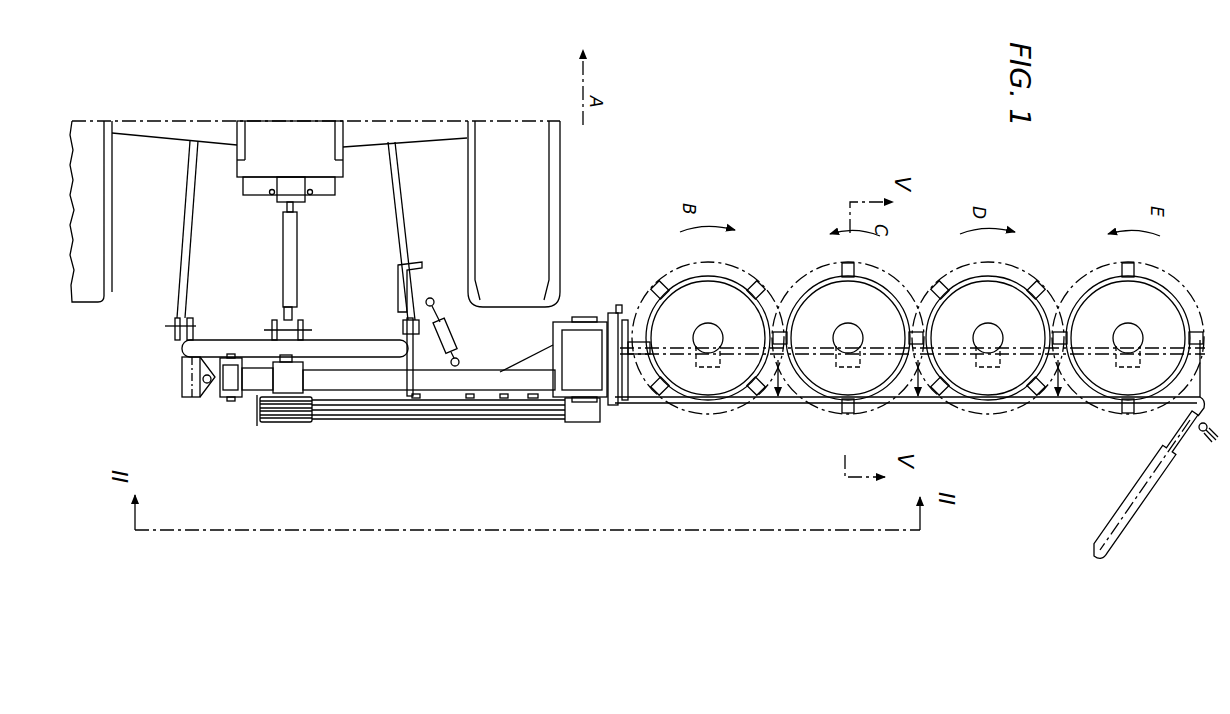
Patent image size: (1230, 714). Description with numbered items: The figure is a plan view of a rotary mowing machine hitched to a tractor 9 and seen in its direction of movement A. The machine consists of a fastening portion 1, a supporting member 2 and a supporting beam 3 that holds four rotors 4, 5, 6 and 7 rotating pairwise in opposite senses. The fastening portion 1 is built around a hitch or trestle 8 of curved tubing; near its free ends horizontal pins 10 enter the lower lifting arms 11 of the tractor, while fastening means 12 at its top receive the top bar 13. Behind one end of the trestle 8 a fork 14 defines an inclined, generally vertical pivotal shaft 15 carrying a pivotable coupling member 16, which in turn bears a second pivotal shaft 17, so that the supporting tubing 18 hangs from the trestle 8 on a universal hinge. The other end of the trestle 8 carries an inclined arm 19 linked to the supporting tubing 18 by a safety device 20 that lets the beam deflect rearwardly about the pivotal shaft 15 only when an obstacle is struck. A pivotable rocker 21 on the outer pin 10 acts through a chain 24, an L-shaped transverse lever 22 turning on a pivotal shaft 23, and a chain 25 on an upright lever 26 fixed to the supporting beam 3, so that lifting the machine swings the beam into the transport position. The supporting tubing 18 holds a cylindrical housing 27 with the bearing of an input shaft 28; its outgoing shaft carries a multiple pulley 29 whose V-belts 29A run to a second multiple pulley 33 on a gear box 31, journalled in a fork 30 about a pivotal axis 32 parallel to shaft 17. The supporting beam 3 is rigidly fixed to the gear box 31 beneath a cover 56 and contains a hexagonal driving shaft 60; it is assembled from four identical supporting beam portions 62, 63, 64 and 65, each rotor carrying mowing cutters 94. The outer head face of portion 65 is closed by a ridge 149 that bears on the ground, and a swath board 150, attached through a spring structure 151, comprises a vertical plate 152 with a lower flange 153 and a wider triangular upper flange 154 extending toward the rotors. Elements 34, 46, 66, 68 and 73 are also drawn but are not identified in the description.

The fastening portion 1 is at (343, 338).
The supporting member 2 is at (491, 369).
The supporting beam 3 is at (1080, 405).
The rotor 4 is at (741, 276).
The rotor 5 is at (823, 276).
The rotor 6 is at (1031, 274).
The rotor 7 is at (1177, 270).
The hitch or trestle 8 is at (242, 338).
The tractor 9 is at (438, 139).
The horizontal pins 10 is at (174, 326).
The lower lifting arms 11 is at (186, 200).
The fastening means 12 is at (284, 300).
The top bar 13 is at (297, 255).
The fork 14 is at (182, 372).
The pivotal shaft 15 is at (190, 390).
The pivotable coupling member 16 is at (208, 398).
The pivotal shaft 17 is at (230, 402).
The supporting tubing 18 is at (252, 398).
The arm 19 is at (434, 296).
The safety device 20 is at (457, 348).
The pivotable rocker 21 is at (404, 292).
The transverse lever 22 is at (470, 401).
The pivotal shaft 23 is at (504, 401).
The chain 24 is at (417, 401).
The chain 25 is at (533, 401).
The upright lever 26 is at (627, 402).
The cylindrical housing 27 is at (260, 404).
The input shaft 28 is at (292, 355).
The multiple pulley 29 is at (300, 423).
The V-belts 29A is at (340, 422).
The fork 30 is at (556, 322).
The gear box 31 is at (562, 350).
The pivotal axis 32 is at (618, 305).
The multiple pulley 33 is at (592, 424).
The plate 34 is at (613, 313).
The tine 46 is at (663, 286).
The cover 56 is at (646, 320).
The hexagonal driving shaft 60 is at (724, 345).
The supporting beam portion 62 is at (772, 404).
The supporting beam portion 63 is at (786, 404).
The supporting beam portion 64 is at (923, 404).
The supporting beam portion 65 is at (1063, 404).
The tine 66 is at (945, 285).
The tine 68 is at (894, 268).
The hub bracket 73 is at (860, 367).
The mowing cutters 94 is at (853, 413).
The ridge 149 is at (1206, 399).
The swath board 150 is at (1160, 503).
The spring structure 151 is at (1214, 460).
The vertical plate 152 is at (1132, 525).
The flange 153 is at (1160, 450).
The flange 154 is at (1092, 548).